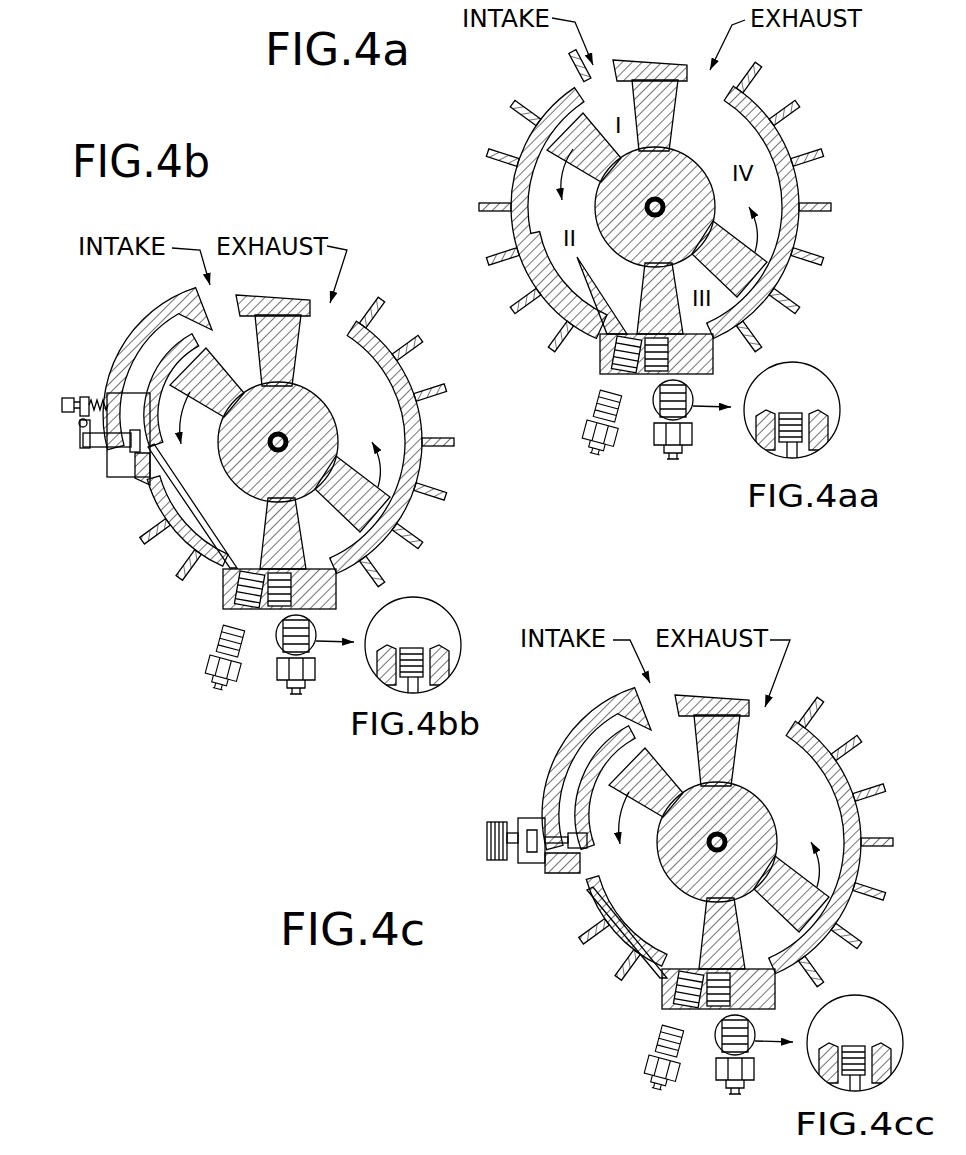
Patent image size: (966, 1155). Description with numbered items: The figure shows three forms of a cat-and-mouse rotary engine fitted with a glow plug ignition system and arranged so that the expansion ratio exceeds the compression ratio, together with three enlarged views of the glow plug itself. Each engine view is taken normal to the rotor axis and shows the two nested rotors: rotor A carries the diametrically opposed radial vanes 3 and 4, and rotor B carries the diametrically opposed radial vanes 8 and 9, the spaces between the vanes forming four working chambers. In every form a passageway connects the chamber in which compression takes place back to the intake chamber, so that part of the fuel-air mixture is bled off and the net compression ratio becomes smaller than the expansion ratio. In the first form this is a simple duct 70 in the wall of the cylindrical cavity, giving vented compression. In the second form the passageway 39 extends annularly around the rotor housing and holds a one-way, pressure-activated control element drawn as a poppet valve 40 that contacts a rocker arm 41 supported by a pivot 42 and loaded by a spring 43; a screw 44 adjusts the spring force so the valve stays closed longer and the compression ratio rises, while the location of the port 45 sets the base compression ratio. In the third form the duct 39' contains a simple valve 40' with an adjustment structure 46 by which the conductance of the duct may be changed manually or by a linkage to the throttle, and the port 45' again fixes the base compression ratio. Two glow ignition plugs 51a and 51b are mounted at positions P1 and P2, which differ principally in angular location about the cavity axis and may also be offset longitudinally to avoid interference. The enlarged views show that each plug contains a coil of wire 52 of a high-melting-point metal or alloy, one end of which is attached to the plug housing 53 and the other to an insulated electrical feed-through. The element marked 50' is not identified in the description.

In FIG. 4a, the radial vane 3 is at (793, 251).
In FIG. 4a, the radial vane 4 is at (531, 200).
In FIG. 4a, the radial vane 8 is at (569, 312).
In FIG. 4a, the radial vane 9 is at (650, 43).
In FIG. 4a, the duct 70 is at (535, 147).
In FIG. 4a, the sliding partition 50' is at (534, 295).
In FIG. 4a, the plug position P1 is at (590, 378).
In FIG. 4b, the plug position P1 is at (210, 613).
In FIG. 4c, the plug position P1 is at (651, 1014).
In FIG. 4a, the plug position P2 is at (577, 363).
In FIG. 4b, the plug position P2 is at (197, 598).
In FIG. 4c, the plug position P2 is at (638, 999).
In FIG. 4a, the glow ignition plug 51a is at (655, 439).
In FIG. 4b, the glow ignition plug 51a is at (274, 673).
In FIG. 4c, the glow ignition plug 51a is at (719, 1074).
In FIG. 4a, the glow ignition plug 51b is at (575, 429).
In FIG. 4b, the glow ignition plug 51b is at (197, 663).
In FIG. 4c, the glow ignition plug 51b is at (638, 1064).
In FIG. 4aa, the coil of wire 52 is at (813, 389).
In FIG. 4bb, the coil of wire 52 is at (432, 625).
In FIG. 4cc, the coil of wire 52 is at (875, 1025).
In FIG. 4aa, the plug housing 53 is at (818, 397).
In FIG. 4bb, the plug housing 53 is at (437, 632).
In FIG. 4cc, the plug housing 53 is at (879, 1032).
In FIG. 4b, the passageway 39 is at (157, 365).
In FIG. 4b, the poppet valve 40 is at (130, 447).
In FIG. 4b, the rocker arm 41 is at (70, 474).
In FIG. 4b, the pivot 42 is at (92, 459).
In FIG. 4b, the spring 43 is at (87, 367).
In FIG. 4b, the screw 44 is at (65, 381).
In FIG. 4b, the port 45 is at (153, 518).
In FIG. 4c, the duct 39' is at (596, 763).
In FIG. 4c, the valve 40' is at (563, 835).
In FIG. 4c, the port 45' is at (579, 932).
In FIG. 4c, the adjustment structure 46 is at (513, 808).